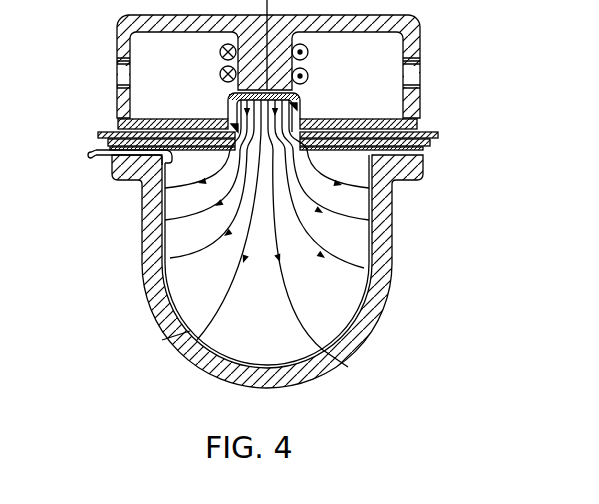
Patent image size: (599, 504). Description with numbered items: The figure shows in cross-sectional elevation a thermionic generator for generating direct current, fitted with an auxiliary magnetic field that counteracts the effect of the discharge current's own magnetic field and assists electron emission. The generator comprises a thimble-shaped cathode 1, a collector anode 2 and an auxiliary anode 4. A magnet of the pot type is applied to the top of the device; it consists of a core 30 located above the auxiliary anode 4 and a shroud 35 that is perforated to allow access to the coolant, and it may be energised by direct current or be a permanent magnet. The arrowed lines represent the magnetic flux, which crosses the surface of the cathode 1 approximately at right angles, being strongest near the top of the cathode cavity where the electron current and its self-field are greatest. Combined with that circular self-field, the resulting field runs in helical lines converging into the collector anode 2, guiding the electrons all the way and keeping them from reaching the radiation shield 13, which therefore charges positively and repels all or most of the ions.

The thimble-shaped cathode 1 is at (168, 285).
The collector anode 2 is at (231, 124).
The auxiliary anode 4 is at (296, 104).
The radiation shield 13 is at (314, 152).
The core 30 is at (306, 62).
The shroud 35 is at (112, 32).